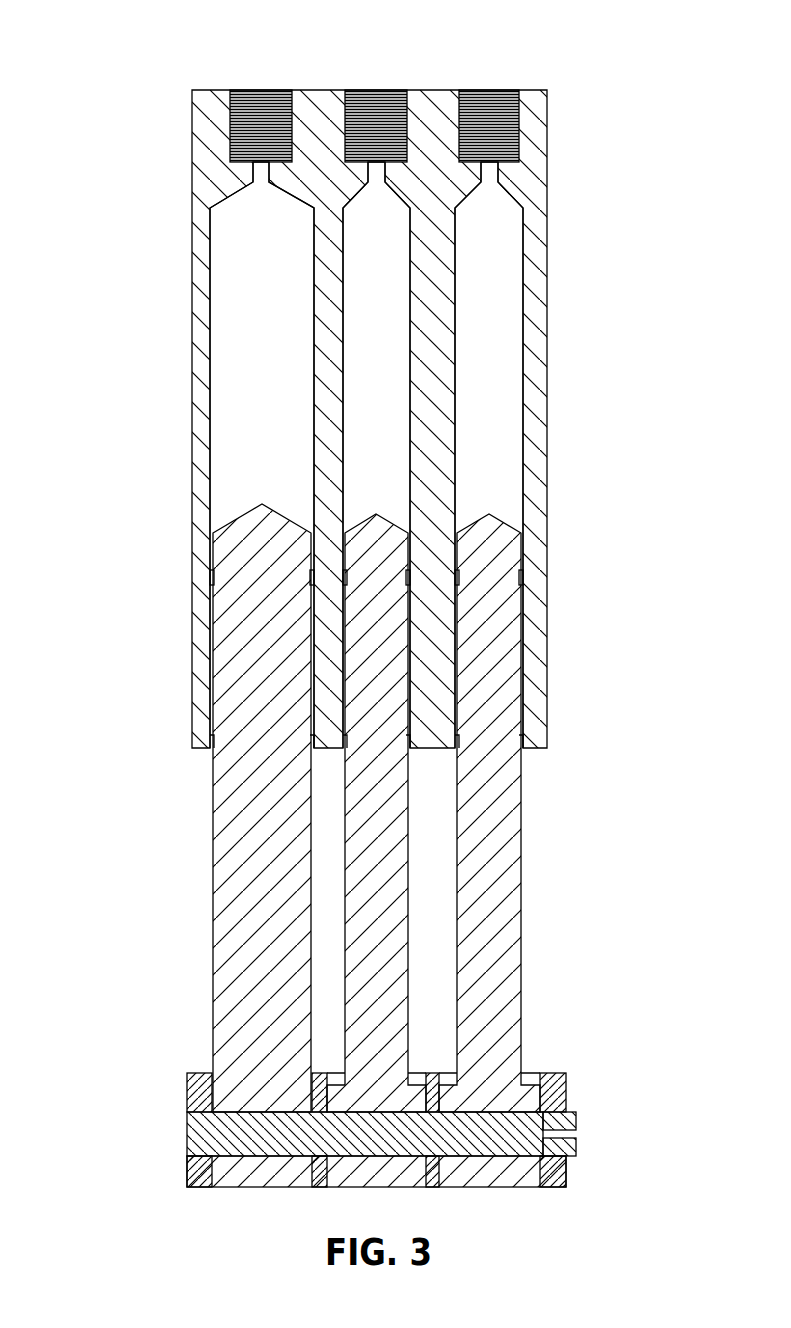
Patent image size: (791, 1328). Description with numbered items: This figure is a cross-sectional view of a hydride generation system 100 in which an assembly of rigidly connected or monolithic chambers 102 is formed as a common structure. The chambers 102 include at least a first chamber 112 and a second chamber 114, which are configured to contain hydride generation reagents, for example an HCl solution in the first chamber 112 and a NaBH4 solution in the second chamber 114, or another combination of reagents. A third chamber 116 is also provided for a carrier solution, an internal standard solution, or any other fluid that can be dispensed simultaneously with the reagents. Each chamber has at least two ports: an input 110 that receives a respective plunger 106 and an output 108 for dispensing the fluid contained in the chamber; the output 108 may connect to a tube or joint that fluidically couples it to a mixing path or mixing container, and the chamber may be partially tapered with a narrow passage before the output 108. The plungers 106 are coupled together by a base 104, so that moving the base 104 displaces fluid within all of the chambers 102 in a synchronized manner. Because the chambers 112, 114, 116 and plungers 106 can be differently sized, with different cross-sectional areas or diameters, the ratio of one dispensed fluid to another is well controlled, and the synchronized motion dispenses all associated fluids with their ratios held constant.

The hydride generation system 100 is at (138, 32).
The chambers 102 is at (548, 425).
The base 104 is at (566, 1088).
The plungers 106 is at (345, 908).
The output 108 is at (258, 90).
The input 110 is at (209, 750).
The first chamber 112 is at (510, 312).
The second chamber 114 is at (357, 325).
The third chamber 116 is at (228, 366).